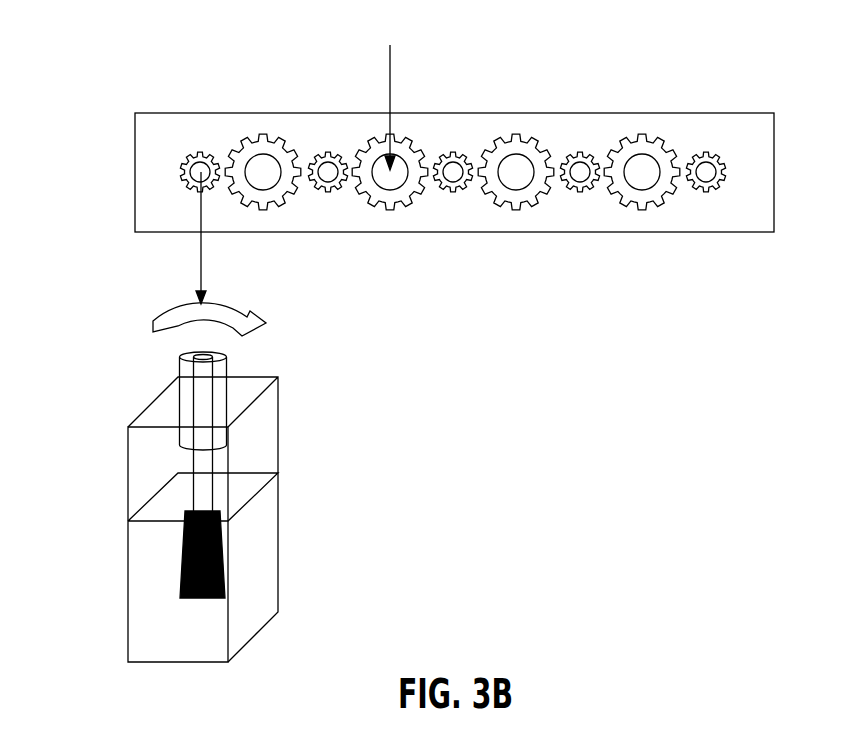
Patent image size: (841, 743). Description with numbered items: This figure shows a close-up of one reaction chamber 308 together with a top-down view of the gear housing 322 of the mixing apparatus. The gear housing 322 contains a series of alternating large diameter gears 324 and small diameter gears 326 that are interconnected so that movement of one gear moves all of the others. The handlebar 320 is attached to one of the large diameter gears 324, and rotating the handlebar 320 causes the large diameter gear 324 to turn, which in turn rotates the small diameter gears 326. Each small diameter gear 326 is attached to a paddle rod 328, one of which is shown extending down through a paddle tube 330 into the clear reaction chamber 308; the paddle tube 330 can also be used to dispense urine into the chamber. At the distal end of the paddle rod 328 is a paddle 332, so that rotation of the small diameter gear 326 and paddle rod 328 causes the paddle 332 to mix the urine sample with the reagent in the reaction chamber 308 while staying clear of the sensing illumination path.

The reaction chamber 308 is at (96, 574).
The handlebar 320 is at (393, 94).
The gear housing 322 is at (759, 113).
The large diameter gear 324 is at (278, 132).
The small diameter gear 326 is at (212, 190).
The paddle rod 328 is at (215, 495).
The paddle tube 330 is at (227, 369).
The paddle 332 is at (228, 545).